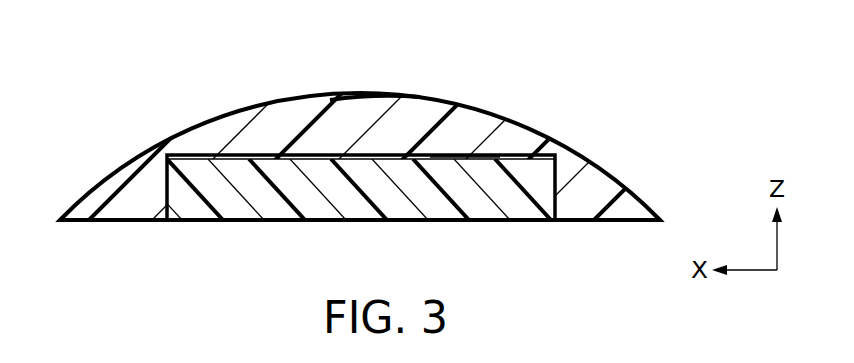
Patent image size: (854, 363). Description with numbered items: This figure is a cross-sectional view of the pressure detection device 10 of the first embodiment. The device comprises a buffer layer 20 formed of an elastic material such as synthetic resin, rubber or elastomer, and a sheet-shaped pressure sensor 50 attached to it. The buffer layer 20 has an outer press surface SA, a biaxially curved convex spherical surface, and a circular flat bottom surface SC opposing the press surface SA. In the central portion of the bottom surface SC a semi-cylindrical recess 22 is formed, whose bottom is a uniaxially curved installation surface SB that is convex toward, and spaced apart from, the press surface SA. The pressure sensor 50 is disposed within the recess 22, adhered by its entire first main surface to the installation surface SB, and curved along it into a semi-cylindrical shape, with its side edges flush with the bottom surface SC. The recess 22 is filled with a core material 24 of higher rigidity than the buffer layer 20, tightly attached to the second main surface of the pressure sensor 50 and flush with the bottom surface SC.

The pressure detection device 10 is at (412, 158).
The buffer layer 20 is at (207, 137).
The recess 22 is at (556, 200).
The core material 24 is at (353, 210).
The pressure sensor 50 is at (221, 168).
The press surface SA is at (378, 93).
The installation surface SB is at (446, 156).
The bottom surface SC is at (604, 222).